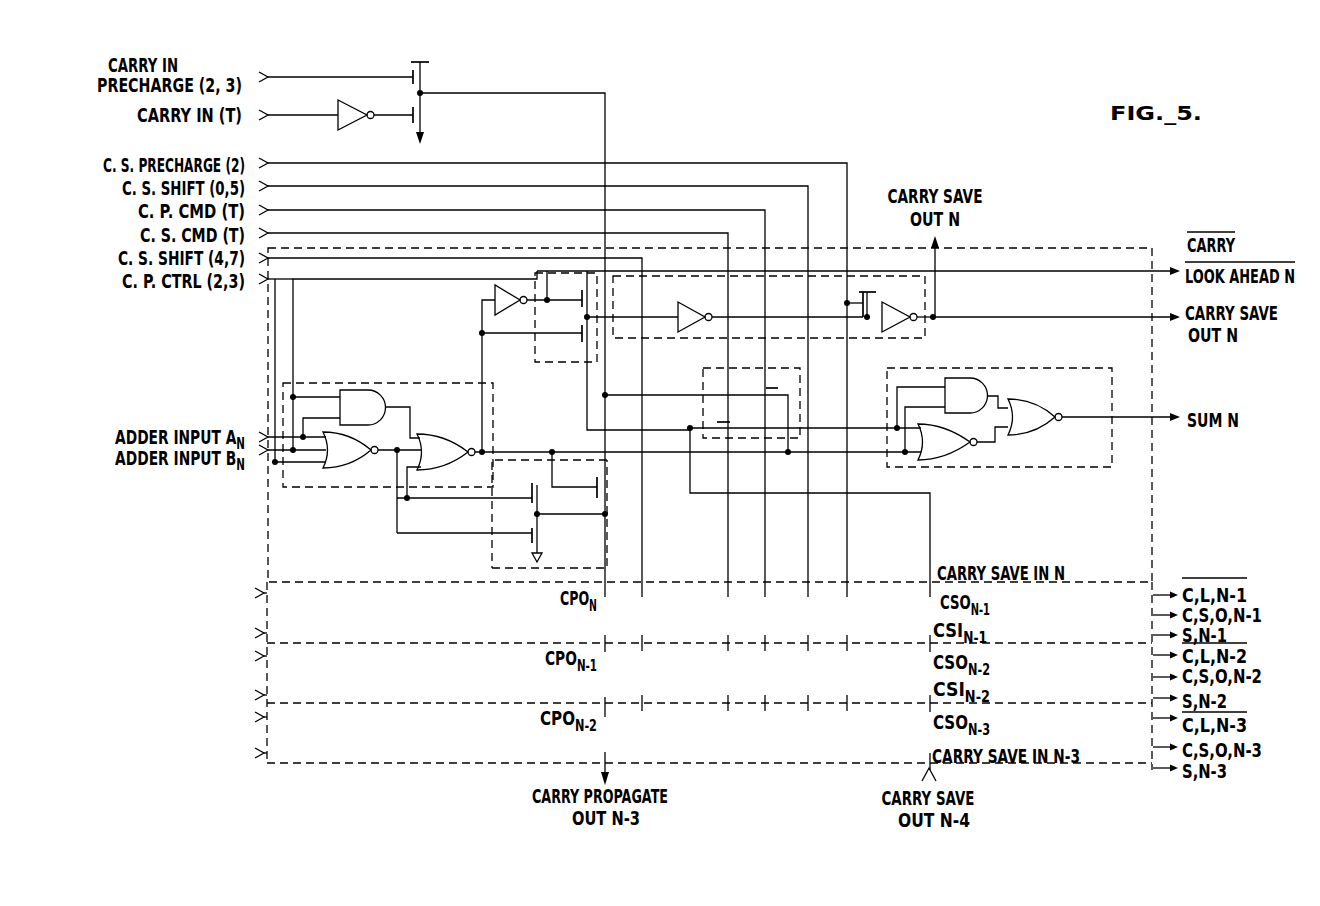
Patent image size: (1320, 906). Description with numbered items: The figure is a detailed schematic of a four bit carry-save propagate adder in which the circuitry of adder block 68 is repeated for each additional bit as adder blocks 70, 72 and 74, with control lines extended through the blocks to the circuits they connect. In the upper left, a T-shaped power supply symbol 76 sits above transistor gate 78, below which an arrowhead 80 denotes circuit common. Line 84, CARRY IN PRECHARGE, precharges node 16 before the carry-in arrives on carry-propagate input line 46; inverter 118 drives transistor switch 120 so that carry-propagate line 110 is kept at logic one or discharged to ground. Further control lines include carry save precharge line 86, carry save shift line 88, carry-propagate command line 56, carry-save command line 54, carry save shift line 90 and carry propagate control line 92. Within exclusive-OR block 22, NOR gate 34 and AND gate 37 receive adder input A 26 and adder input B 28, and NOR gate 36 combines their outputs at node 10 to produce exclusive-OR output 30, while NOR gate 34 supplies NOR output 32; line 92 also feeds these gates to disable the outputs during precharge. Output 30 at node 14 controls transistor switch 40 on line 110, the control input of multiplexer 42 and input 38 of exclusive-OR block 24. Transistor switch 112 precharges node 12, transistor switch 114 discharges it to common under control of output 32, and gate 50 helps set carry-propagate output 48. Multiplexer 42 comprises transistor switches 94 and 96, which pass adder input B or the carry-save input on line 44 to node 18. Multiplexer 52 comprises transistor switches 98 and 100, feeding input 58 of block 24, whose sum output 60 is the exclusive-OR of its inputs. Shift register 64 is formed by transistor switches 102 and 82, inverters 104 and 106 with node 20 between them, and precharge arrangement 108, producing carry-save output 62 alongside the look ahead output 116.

The carry in precharge line 84 is at (298, 77).
The transistor gate 78 is at (410, 74).
The power supply symbol 76 is at (423, 73).
The carry-propagate input line 46 is at (288, 115).
The transistor switch 120 is at (412, 114).
The arrowhead 80 is at (423, 120).
The inverter 118 is at (345, 128).
The carry save precharge line 86 is at (298, 163).
The carry save shift line 88 is at (298, 186).
The carry-propagate command line 56 is at (298, 210).
The carry-save command line 54 is at (298, 233).
The carry propagate control line 92 is at (281, 266).
The carry save shift line 90 is at (378, 262).
The look ahead output 116 is at (1040, 273).
The adder block 68 is at (265, 350).
The exclusive-OR block 22 is at (378, 386).
The AND gate 37 is at (388, 400).
The adder input A 26 is at (260, 435).
The NOR gate 34 is at (367, 439).
The adder input B 28 is at (260, 454).
The node 10 is at (395, 453).
The NOR gate 36 is at (444, 434).
The exclusive-OR output 30 is at (504, 436).
The node 14 is at (553, 450).
The transistor switch 40 is at (592, 480).
The carry-propagate line 110 is at (607, 460).
The transistor switch 112 is at (530, 504).
The node 12 is at (598, 517).
The transistor switch 114 is at (530, 540).
The NOR output 32 is at (433, 535).
The carry-propagate output 48 is at (608, 570).
The gate 50 is at (547, 537).
The multiplexer 42 is at (552, 368).
The transistor switch 94 is at (578, 306).
The node 18 is at (600, 319).
The transistor switch 96 is at (580, 338).
The node 16 is at (607, 394).
The transistor switch 102 is at (643, 316).
The inverter 104 is at (697, 312).
The node 20 is at (733, 316).
The transistor switch 82 is at (819, 296).
The precharge arrangement 108 is at (876, 297).
The inverter 106 is at (897, 330).
The shift register 64 is at (928, 340).
The carry-save output 62 is at (1037, 318).
The multiplexer 52 is at (700, 415).
The transistor switch 98 is at (762, 388).
The transistor switch 100 is at (738, 408).
The carry-save input line 44 is at (932, 518).
The input 58 is at (886, 426).
The input 38 is at (883, 455).
The exclusive-OR block 24 is at (1075, 368).
The sum output 60 is at (1160, 415).
The adder block 70 is at (303, 627).
The adder block 72 is at (303, 684).
The adder block 74 is at (303, 744).